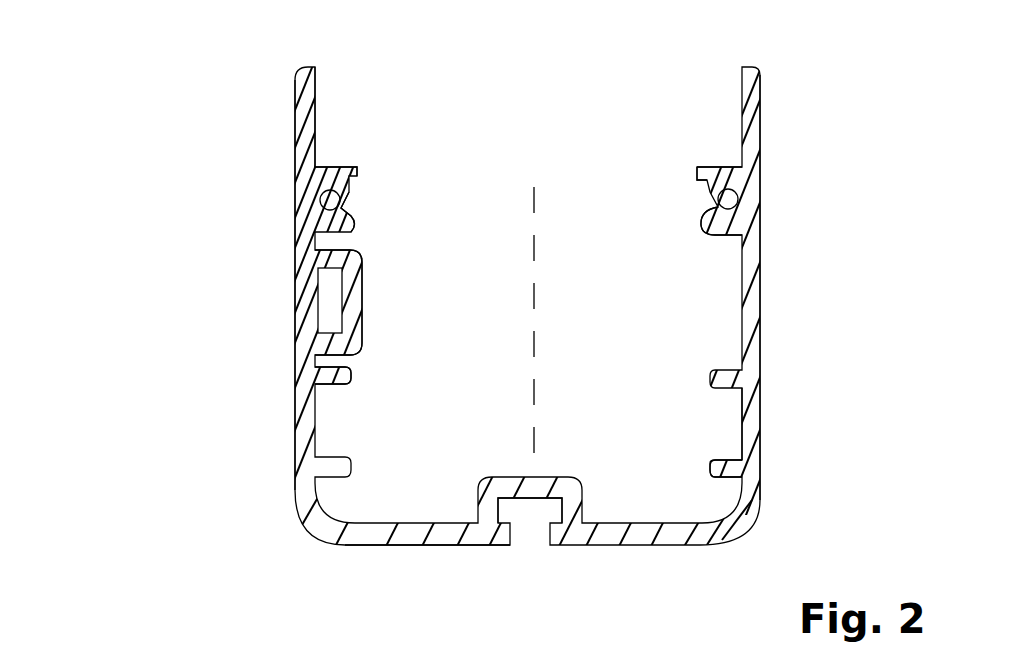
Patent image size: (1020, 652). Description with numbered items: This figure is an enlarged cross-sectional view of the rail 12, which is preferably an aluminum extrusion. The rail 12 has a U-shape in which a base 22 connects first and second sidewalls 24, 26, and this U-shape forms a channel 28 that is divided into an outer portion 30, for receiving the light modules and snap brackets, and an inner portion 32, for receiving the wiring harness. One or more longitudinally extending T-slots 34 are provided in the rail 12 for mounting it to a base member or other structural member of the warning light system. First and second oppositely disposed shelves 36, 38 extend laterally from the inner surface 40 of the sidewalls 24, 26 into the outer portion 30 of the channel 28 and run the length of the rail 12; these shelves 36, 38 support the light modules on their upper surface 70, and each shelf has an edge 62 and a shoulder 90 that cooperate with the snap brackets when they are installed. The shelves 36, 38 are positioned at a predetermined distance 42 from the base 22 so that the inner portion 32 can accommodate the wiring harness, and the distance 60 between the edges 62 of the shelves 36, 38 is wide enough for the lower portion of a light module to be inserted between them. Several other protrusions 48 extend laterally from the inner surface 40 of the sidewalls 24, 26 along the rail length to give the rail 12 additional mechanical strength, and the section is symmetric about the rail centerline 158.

The rail 12 is at (195, 508).
The base 22 is at (415, 547).
The first sidewall 24 is at (298, 228).
The second sidewall 26 is at (762, 262).
The channel 28 is at (450, 312).
The outer portion 30 is at (548, 105).
The inner portion 32 is at (703, 420).
The T-slot 34 is at (322, 302).
The first shelf 36 is at (308, 186).
The second shelf 38 is at (722, 178).
The inner surface 40 is at (342, 128).
The predetermined distance 42 is at (750, 518).
The protrusions 48 is at (345, 378).
The distance between shelf edges 60 is at (697, 135).
The edge 62 is at (700, 178).
The upper surface 70 is at (708, 168).
The shoulder 90 is at (348, 198).
The rail centerline 158 is at (538, 345).